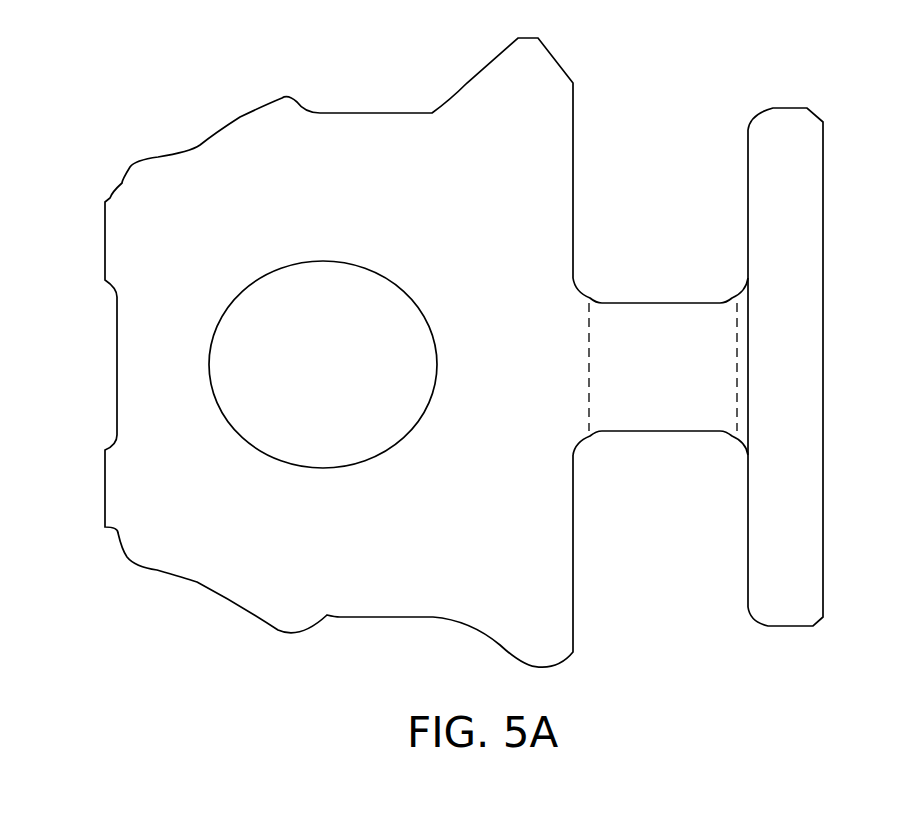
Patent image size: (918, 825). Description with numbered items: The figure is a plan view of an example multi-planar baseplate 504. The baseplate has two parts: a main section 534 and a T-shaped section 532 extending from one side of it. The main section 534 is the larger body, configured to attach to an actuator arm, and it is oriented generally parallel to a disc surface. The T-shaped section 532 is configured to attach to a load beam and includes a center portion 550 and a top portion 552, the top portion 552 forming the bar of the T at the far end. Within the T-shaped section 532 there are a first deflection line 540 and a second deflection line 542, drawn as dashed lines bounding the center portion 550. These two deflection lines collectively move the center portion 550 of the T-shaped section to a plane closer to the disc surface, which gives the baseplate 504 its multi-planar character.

The multi-planar baseplate 504 is at (142, 101).
The T-shaped section 532 is at (708, 242).
The main section 534 is at (411, 236).
The first deflection line 540 is at (588, 372).
The second deflection line 542 is at (737, 400).
The center portion 550 is at (685, 361).
The top portion 552 is at (808, 361).